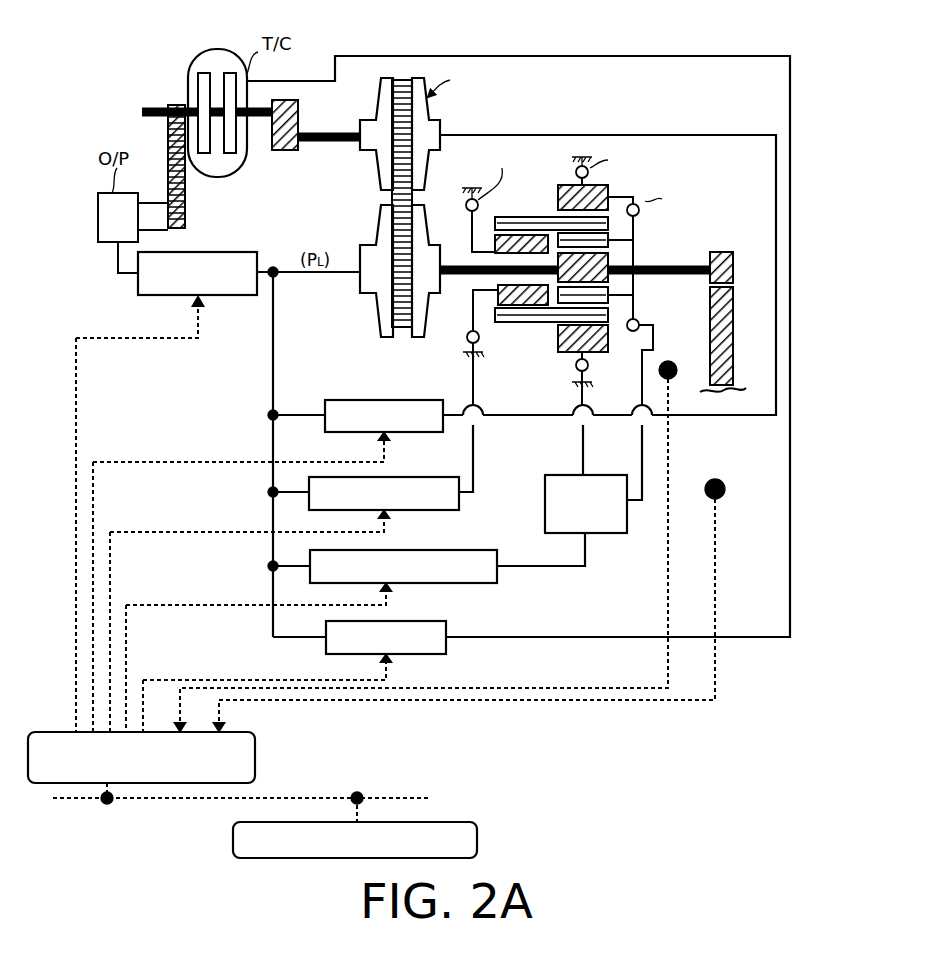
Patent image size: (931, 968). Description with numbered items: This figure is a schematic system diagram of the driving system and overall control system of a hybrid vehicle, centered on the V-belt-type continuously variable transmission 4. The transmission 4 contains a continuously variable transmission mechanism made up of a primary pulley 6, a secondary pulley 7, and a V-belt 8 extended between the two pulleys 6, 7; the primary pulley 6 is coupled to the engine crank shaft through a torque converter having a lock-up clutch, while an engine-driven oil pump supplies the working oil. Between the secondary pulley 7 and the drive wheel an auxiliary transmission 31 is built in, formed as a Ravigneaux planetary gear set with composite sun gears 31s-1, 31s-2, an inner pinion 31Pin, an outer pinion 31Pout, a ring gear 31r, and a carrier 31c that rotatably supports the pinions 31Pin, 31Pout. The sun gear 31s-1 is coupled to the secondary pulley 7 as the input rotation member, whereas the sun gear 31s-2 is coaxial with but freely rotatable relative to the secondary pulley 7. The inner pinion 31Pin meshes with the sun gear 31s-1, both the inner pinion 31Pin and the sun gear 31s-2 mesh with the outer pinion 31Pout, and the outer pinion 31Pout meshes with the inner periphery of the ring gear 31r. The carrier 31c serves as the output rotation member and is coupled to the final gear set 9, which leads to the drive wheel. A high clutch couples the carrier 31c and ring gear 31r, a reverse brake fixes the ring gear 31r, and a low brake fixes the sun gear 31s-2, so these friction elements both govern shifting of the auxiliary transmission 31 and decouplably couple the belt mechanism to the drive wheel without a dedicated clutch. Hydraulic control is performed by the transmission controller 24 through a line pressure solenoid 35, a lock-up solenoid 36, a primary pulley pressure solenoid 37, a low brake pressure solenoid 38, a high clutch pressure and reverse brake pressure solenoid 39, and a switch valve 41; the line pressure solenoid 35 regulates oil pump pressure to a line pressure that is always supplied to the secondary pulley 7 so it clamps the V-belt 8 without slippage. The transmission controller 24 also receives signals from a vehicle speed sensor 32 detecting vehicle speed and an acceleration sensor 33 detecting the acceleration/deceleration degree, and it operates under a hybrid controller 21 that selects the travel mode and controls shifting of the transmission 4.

The V-belt-type continuously variable transmission 4 is at (702, 38).
The primary pulley 6 is at (403, 201).
The secondary pulley 7 is at (375, 287).
The V-belt 8 is at (380, 196).
The final gear set 9 is at (734, 265).
The hybrid controller 21 is at (233, 840).
The transmission controller 24 is at (256, 750).
The auxiliary transmission 31 is at (530, 213).
The ring gear 31r is at (608, 192).
The inner pinion 31Pin is at (630, 226).
The sun gear 31s-1 is at (610, 258).
The carrier 31c is at (635, 287).
The sun gear 31s-2 is at (497, 293).
The outer pinion 31Pout is at (520, 323).
The vehicle speed sensor 32 is at (672, 362).
The acceleration sensor 33 is at (725, 489).
The line pressure solenoid 35 is at (248, 252).
The lock-up solenoid 36 is at (426, 621).
The primary pulley pressure solenoid 37 is at (404, 400).
The low brake pressure solenoid 38 is at (418, 477).
The high clutch pressure and reverse brake pressure solenoid 39 is at (478, 550).
The switch valve 41 is at (552, 475).